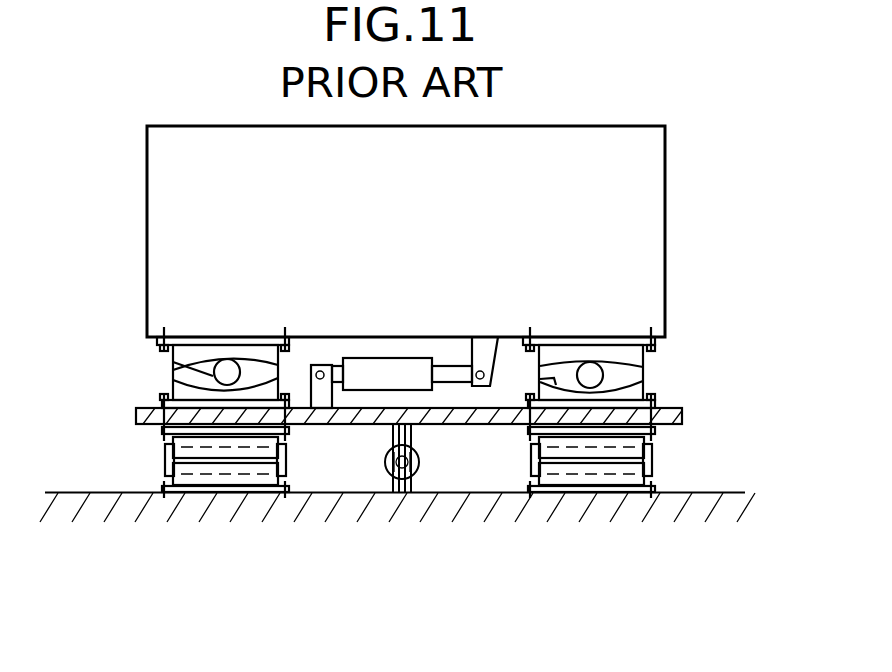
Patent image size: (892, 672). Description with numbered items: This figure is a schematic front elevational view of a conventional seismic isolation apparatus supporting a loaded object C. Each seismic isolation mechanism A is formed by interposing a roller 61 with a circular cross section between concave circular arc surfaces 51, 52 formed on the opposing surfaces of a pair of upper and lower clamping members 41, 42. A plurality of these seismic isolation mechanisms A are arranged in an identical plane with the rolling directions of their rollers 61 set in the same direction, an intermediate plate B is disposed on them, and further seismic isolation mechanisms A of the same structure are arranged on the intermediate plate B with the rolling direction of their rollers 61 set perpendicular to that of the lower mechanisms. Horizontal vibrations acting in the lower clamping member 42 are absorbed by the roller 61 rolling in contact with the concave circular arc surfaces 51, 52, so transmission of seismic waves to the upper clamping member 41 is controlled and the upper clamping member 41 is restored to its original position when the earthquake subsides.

The loaded object C is at (645, 194).
The intermediate plate B is at (683, 417).
The seismic isolation mechanism A is at (154, 380).
The upper clamping member 41 is at (630, 357).
The lower clamping member 42 is at (640, 397).
The concave circular arc surface 51 is at (260, 372).
The concave circular arc surface 52 is at (273, 378).
The roller 61 is at (172, 366).